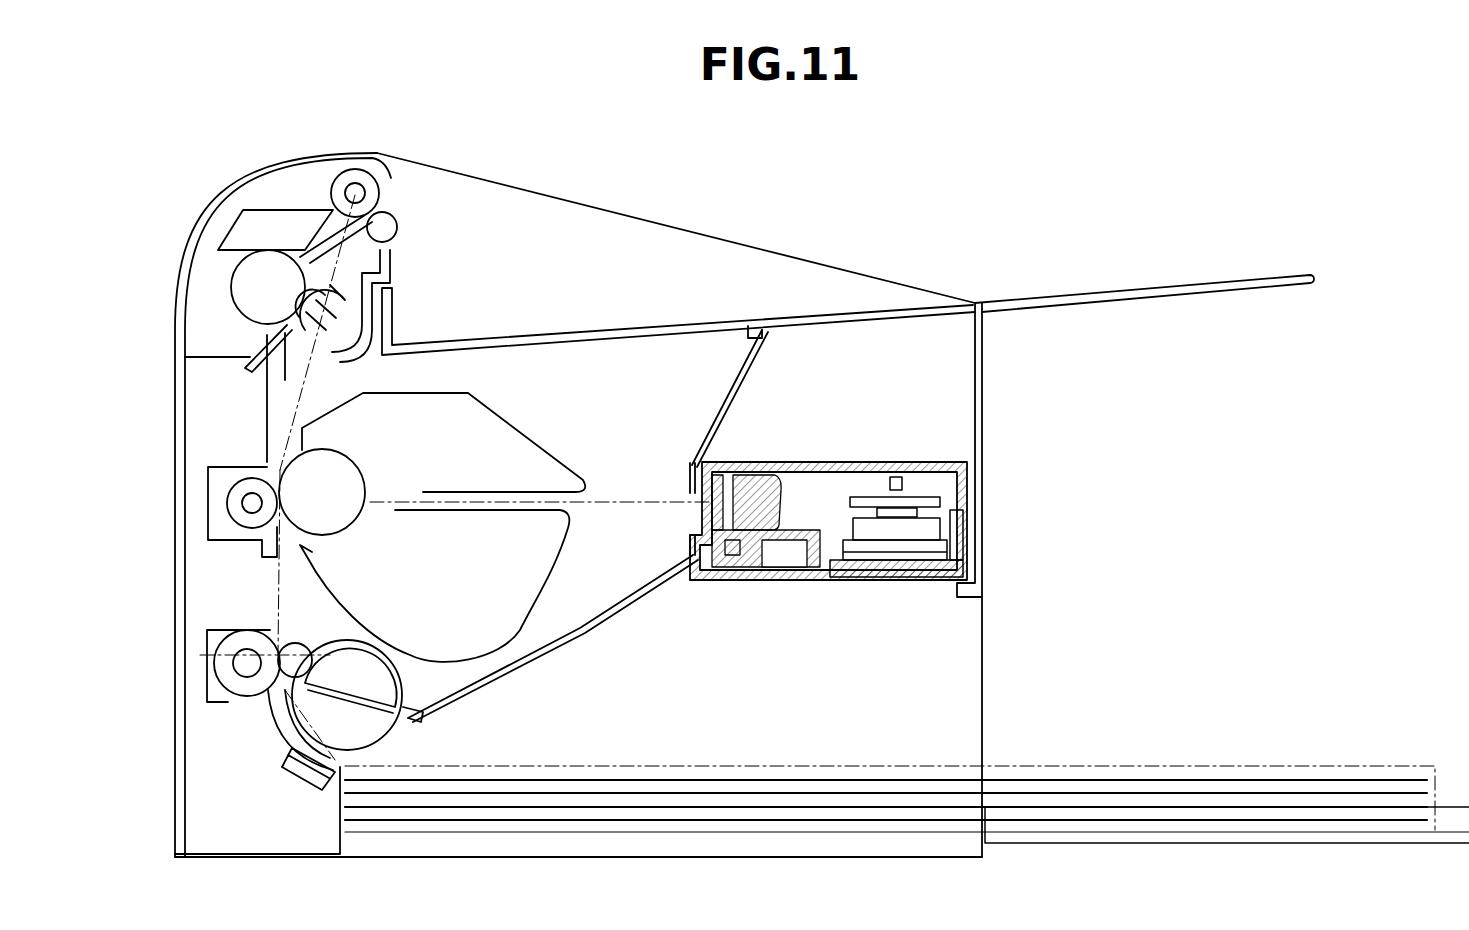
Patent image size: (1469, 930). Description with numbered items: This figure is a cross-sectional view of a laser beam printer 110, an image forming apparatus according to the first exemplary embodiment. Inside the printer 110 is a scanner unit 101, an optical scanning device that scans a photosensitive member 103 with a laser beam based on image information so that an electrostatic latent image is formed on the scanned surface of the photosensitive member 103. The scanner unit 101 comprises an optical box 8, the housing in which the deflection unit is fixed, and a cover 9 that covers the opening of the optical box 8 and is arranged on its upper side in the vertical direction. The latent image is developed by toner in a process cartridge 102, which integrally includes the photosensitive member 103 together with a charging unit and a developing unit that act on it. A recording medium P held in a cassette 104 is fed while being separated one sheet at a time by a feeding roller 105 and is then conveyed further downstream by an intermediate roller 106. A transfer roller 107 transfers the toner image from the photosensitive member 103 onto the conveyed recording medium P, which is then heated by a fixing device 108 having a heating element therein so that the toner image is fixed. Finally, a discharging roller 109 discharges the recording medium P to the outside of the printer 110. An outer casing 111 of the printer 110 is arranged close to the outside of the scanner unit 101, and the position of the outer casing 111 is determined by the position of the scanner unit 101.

The optical box 8 is at (910, 565).
The cover 9 is at (787, 463).
The scanner unit 101 is at (885, 463).
The process cartridge 102 is at (515, 418).
The photosensitive member 103 is at (300, 466).
The cassette 104 is at (1243, 766).
The feeding roller 105 is at (362, 735).
The intermediate roller 106 is at (222, 663).
The transfer roller 107 is at (245, 500).
The fixing device 108 is at (248, 287).
The discharging roller 109 is at (352, 180).
The printer 110 is at (535, 228).
The outer casing 111 is at (982, 340).
The recording medium P is at (1368, 793).